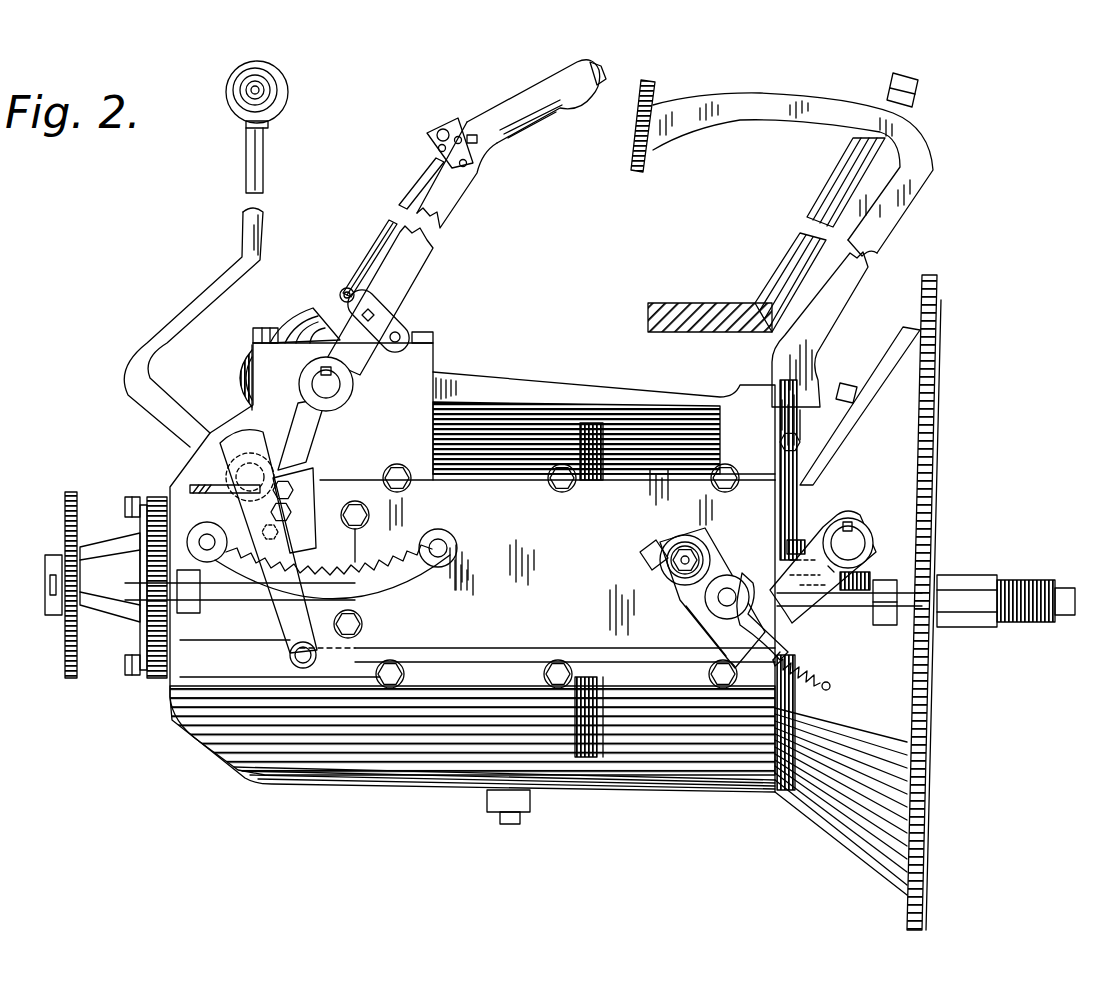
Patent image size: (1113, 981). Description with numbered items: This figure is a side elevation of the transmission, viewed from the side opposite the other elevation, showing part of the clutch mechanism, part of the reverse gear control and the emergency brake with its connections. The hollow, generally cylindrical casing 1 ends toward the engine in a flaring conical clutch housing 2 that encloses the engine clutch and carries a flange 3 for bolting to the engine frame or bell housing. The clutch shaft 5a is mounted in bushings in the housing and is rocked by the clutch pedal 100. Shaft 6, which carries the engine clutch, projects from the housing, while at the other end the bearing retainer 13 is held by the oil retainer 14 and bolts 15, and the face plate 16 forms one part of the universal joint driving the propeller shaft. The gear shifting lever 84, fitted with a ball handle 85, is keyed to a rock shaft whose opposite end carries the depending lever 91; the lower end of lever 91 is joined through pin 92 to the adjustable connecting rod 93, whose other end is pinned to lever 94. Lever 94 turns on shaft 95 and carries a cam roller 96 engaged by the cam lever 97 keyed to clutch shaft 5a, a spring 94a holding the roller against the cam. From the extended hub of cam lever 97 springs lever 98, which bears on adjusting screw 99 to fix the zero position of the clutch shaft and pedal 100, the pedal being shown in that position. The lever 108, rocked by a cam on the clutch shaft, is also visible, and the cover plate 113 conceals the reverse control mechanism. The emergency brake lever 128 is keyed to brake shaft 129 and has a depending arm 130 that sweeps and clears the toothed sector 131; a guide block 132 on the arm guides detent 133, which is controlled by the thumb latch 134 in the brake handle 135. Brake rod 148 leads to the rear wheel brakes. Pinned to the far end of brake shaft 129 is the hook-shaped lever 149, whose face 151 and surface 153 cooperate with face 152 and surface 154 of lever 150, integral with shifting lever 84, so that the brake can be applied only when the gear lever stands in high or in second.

The casing 1 is at (462, 578).
The clutch housing 2 is at (816, 678).
The flange 3 is at (907, 902).
The clutch shaft 5a is at (855, 546).
The shaft 6 is at (964, 575).
The bearing retainer 13 is at (152, 682).
The oil retainer 14 is at (100, 545).
The bolts 15 is at (126, 500).
The face plate 16 is at (64, 512).
The gear shifting lever 84 is at (150, 338).
The ball handle 85 is at (288, 92).
The depending lever 91 is at (283, 612).
The pin 92 is at (291, 650).
The adjustable connecting rod 93 is at (417, 646).
The lever 94 is at (710, 627).
The spring 94a is at (826, 688).
The shaft 95 is at (683, 555).
The cam roller 96 is at (729, 575).
The cam lever 97 is at (788, 652).
The lever 98 is at (812, 522).
The adjusting screw 99 is at (787, 552).
The clutch pedal 100 is at (923, 178).
The lever 108 is at (518, 386).
The cover plate 113 is at (547, 552).
The emergency brake lever 128 is at (405, 280).
The brake shaft 129 is at (336, 393).
The depending arm 130 is at (296, 427).
The toothed sector 131 is at (418, 565).
The guide block 132 is at (367, 524).
The detent 133 is at (299, 560).
The thumb latch 134 is at (599, 86).
The brake handle 135 is at (528, 95).
The brake rod 148 is at (192, 487).
The hook-shaped lever 149 is at (314, 308).
The lever 150 is at (245, 406).
The face 151 is at (296, 322).
The face 152 is at (238, 378).
The surface 153 is at (281, 328).
The surface 154 is at (235, 364).